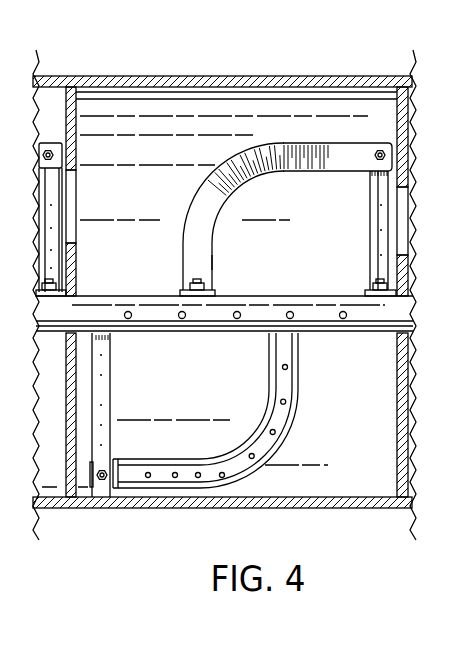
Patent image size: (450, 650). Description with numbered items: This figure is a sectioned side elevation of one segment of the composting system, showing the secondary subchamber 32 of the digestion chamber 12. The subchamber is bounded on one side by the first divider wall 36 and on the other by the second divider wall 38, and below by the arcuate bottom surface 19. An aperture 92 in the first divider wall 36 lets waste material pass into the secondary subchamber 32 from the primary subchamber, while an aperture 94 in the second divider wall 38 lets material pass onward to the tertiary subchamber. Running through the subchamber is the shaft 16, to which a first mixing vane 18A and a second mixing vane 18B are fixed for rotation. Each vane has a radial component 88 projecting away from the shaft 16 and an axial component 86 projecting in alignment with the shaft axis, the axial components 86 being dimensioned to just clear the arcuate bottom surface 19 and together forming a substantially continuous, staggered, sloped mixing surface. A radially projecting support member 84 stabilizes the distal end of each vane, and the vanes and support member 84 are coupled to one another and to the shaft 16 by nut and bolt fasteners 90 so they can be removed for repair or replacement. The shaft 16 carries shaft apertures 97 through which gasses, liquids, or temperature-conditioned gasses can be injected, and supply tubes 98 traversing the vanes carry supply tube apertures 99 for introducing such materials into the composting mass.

The digestion chamber 12 is at (108, 69).
The secondary subchamber 32 is at (170, 107).
The first mixing vane 18A is at (198, 193).
The aperture 92 is at (72, 226).
The nut and bolt fasteners 90 is at (194, 284).
The radial component 88 is at (213, 262).
The shaft 16 is at (224, 311).
The axial component 86 is at (345, 171).
The support member 84 is at (375, 237).
The aperture 94 is at (402, 207).
The shaft apertures 97 is at (179, 317).
The first divider wall 36 is at (65, 355).
The supply tubes 98 is at (280, 386).
The supply tube apertures 99 is at (293, 403).
The second divider wall 38 is at (397, 382).
The second mixing vane 18B is at (230, 410).
The arcuate bottom surface 19 is at (352, 496).